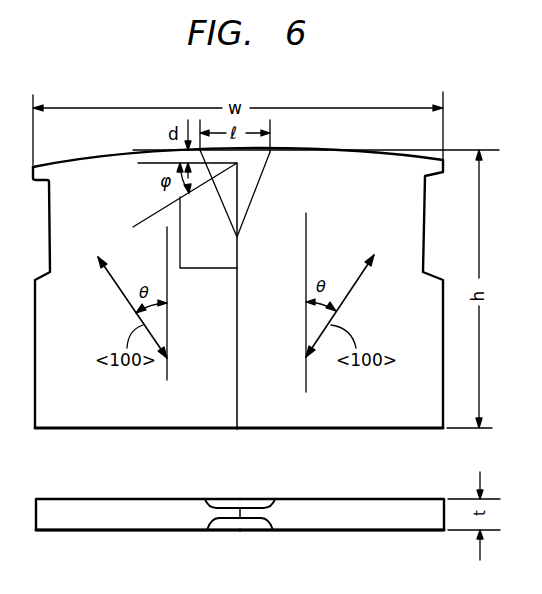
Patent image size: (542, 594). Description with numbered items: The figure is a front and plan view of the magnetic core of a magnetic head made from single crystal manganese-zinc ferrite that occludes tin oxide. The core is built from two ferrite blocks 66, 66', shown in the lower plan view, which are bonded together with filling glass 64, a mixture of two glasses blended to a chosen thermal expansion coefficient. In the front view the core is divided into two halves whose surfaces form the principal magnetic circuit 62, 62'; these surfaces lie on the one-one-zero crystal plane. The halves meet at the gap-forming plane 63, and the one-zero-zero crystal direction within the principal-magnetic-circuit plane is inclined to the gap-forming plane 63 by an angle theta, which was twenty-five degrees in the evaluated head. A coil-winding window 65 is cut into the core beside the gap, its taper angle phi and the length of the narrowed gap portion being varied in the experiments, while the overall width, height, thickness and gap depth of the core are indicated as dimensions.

The plane forming the principal magnetic circuit 62 is at (135, 320).
The plane forming the principal magnetic circuit 62' is at (340, 314).
The gap-forming plane 63 is at (237, 405).
The filling glass 64 is at (223, 523).
The coil-winding window 65 is at (222, 253).
The ferrite block 66 is at (138, 533).
The ferrite block 66' is at (342, 533).